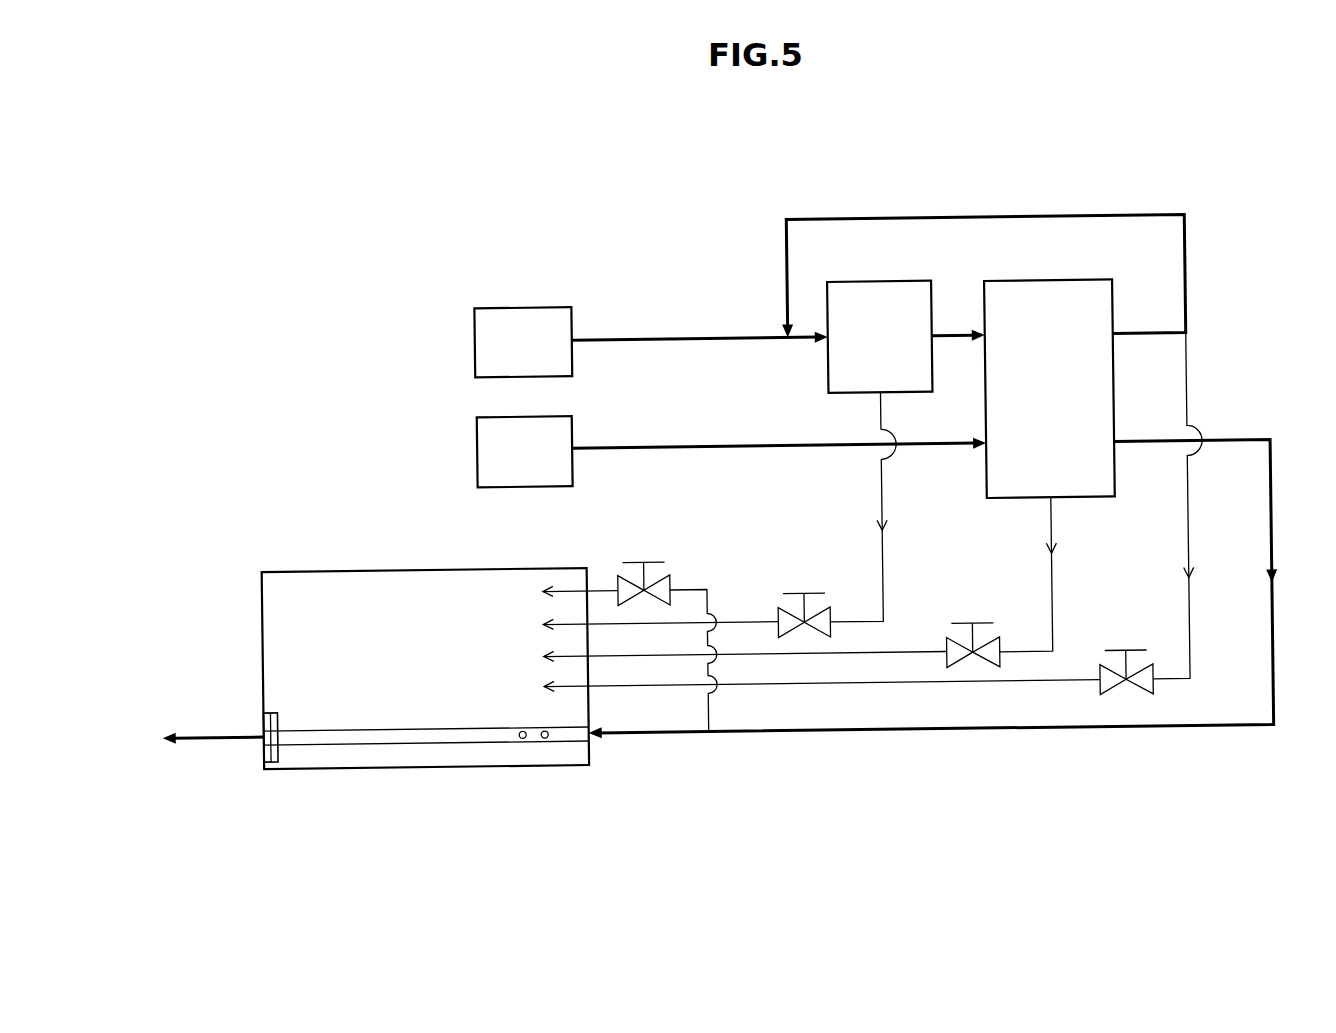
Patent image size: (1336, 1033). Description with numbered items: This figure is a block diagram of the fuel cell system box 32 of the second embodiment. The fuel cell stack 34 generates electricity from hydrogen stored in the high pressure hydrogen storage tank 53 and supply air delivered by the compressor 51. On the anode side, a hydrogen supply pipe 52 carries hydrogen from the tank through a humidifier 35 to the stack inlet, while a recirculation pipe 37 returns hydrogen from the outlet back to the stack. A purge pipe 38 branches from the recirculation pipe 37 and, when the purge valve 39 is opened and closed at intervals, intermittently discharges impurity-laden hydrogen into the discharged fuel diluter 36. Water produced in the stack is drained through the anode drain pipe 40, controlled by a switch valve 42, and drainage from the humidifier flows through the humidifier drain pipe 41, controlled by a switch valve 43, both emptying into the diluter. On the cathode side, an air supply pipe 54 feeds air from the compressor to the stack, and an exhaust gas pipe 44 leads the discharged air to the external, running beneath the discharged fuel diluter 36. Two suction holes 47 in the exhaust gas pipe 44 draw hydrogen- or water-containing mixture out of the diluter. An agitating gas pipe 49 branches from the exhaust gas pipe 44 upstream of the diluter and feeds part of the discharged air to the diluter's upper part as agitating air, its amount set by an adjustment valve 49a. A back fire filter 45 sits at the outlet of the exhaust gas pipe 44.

The fuel cell system box 32 is at (336, 312).
The fuel cell stack 34 is at (1085, 285).
The humidifier 35 is at (898, 284).
The discharged fuel diluter 36 is at (347, 567).
The recirculation pipe 37 is at (1188, 270).
The purge pipe 38 is at (1075, 685).
The purge valve 39 is at (1154, 677).
The anode drain pipe 40 is at (919, 655).
The humidifier drain pipe 41 is at (751, 623).
The switch valve 42 is at (999, 647).
The switch valve 43 is at (831, 617).
The exhaust gas pipe 44 is at (1271, 625).
The back fire filter 45 is at (261, 715).
The suction hole 47 is at (521, 737).
The agitating gas pipe 49 is at (572, 590).
The adjustment valve 49a is at (672, 588).
The compressor 51 is at (478, 458).
The hydrogen supply pipe 52 is at (699, 339).
The high pressure hydrogen storage tank 53 is at (477, 347).
The air supply pipe 54 is at (777, 447).